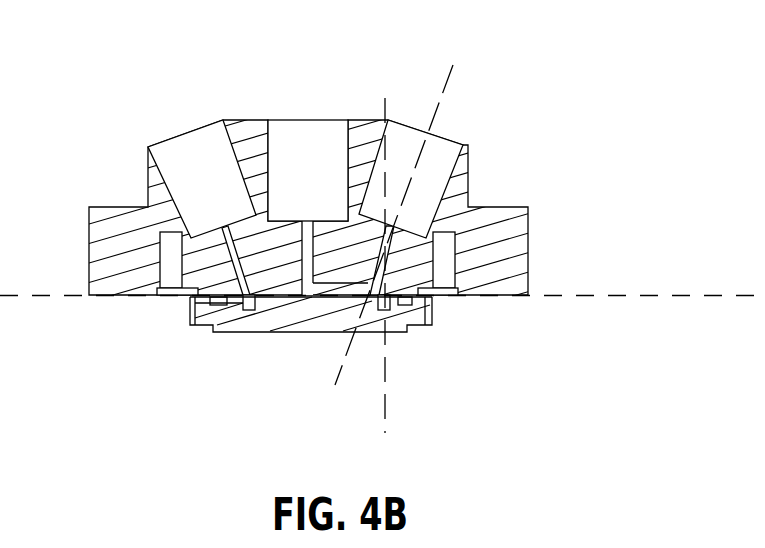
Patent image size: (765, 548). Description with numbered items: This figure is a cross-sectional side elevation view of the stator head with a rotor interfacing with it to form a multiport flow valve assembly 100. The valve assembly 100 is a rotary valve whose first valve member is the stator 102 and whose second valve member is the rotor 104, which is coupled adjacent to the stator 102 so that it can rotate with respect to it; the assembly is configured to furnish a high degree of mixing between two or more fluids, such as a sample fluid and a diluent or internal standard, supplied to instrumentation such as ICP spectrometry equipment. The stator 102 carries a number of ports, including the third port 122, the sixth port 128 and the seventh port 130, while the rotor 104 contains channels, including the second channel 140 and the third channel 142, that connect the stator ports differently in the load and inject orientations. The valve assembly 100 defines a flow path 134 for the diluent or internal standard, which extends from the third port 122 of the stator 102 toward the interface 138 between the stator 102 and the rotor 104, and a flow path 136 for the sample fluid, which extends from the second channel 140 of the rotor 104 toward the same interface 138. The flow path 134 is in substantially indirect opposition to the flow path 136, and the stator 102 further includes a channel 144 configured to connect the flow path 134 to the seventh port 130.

The valve assembly 100 is at (540, 44).
The stator 102 is at (528, 250).
The rotor 104 is at (312, 333).
The third port 122 is at (444, 156).
The sixth port 128 is at (192, 150).
The seventh port 130 is at (284, 140).
The flow path 134 is at (342, 370).
The flow path 136 is at (387, 397).
The interface 138 is at (575, 297).
The second channel 140 is at (418, 309).
The third channel 142 is at (193, 311).
The channel 144 is at (338, 283).